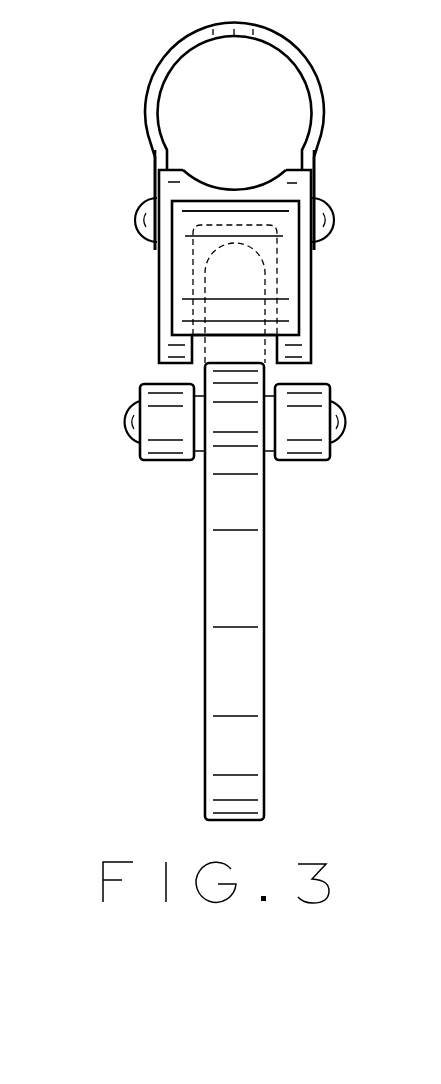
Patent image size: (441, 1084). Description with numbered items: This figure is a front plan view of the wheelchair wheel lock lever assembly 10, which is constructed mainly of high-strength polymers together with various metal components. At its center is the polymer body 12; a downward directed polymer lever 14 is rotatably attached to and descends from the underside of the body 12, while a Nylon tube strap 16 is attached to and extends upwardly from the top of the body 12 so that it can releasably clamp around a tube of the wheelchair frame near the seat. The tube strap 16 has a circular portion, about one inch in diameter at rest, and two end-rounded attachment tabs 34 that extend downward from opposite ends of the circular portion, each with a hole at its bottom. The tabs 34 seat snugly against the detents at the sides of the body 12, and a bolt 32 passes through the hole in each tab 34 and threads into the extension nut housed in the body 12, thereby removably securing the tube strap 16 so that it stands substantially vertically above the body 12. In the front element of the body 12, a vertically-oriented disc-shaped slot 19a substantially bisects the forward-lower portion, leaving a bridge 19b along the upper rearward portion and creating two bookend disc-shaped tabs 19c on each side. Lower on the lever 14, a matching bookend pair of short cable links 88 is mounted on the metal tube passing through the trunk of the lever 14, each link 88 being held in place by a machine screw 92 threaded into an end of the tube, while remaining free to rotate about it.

The wheelchair wheel lock lever assembly 10 is at (127, 85).
The body 12 is at (312, 297).
The lever 14 is at (228, 677).
The tube strap 16 is at (316, 100).
The slot 19a is at (200, 276).
The bridge 19b is at (233, 210).
The tabs 19c is at (159, 353).
The bolt 32 is at (136, 219).
The attachment tabs 34 is at (155, 190).
The cable links 88 is at (163, 455).
The machine screws 92 is at (123, 424).